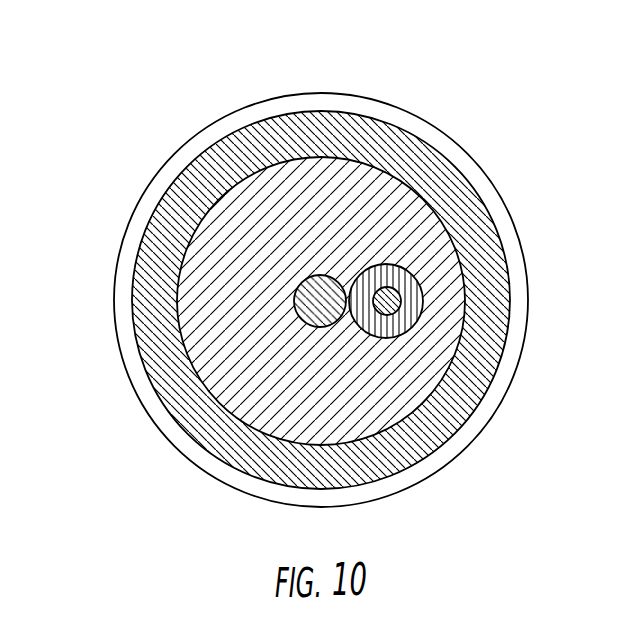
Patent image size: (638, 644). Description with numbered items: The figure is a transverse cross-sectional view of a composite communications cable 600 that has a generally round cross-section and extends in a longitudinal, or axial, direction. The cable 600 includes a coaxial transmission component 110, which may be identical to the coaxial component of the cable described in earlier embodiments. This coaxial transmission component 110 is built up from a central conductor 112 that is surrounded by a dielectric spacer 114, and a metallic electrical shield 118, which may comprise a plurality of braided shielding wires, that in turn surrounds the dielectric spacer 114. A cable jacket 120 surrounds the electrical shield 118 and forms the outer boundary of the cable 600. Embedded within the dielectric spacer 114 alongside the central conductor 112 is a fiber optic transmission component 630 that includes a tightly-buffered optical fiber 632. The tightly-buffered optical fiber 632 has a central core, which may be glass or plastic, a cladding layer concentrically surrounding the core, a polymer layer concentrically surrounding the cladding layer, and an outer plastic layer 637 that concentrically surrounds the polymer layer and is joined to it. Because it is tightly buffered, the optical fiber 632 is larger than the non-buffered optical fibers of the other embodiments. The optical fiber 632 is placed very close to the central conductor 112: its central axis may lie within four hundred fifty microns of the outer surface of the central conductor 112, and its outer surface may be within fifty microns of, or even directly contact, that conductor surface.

The composite communications cable 600 is at (326, 261).
The coaxial transmission component 110 is at (175, 173).
The central conductor 112 is at (312, 315).
The dielectric spacer 114 is at (373, 192).
The electrical shield 118 is at (483, 303).
The cable jacket 120 is at (503, 225).
The fiber optic transmission component 630 is at (473, 358).
The tightly-buffered optical fiber 632 is at (392, 315).
The outer plastic layer 637 is at (410, 307).